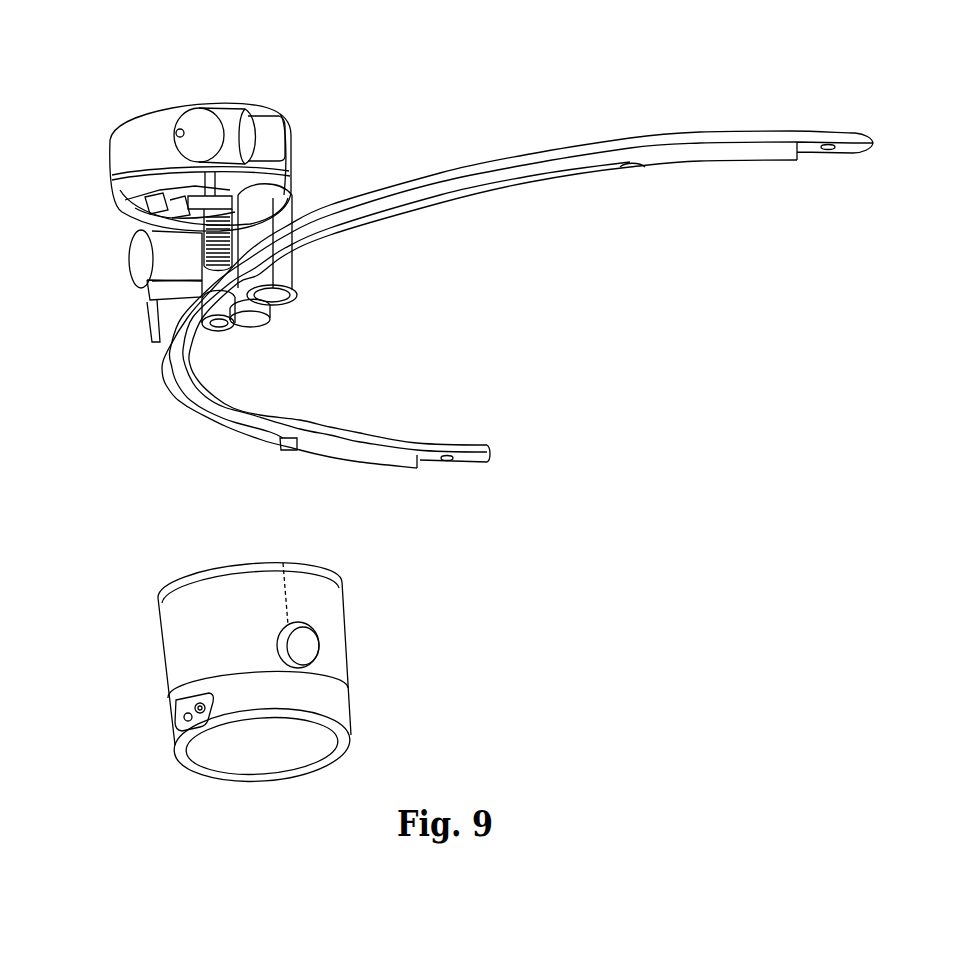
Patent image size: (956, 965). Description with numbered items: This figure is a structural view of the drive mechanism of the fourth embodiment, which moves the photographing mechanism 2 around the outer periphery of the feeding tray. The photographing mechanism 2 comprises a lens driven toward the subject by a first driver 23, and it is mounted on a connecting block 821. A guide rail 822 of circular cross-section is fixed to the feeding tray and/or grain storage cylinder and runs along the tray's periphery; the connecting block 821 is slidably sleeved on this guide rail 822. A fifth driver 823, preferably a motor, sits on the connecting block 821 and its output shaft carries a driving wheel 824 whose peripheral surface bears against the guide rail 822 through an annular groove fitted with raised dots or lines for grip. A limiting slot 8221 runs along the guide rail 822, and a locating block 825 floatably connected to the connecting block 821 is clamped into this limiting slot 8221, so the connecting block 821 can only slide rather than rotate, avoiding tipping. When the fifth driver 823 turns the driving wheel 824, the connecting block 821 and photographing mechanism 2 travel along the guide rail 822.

The photographing mechanism 2 is at (163, 118).
The first driver 23 is at (182, 192).
The connecting block 821 is at (212, 630).
The guide rail 822 is at (343, 452).
The limiting slot 8221 is at (190, 420).
The fifth driver 823 is at (160, 258).
The driving wheel 824 is at (150, 229).
The locating block 825 is at (153, 332).